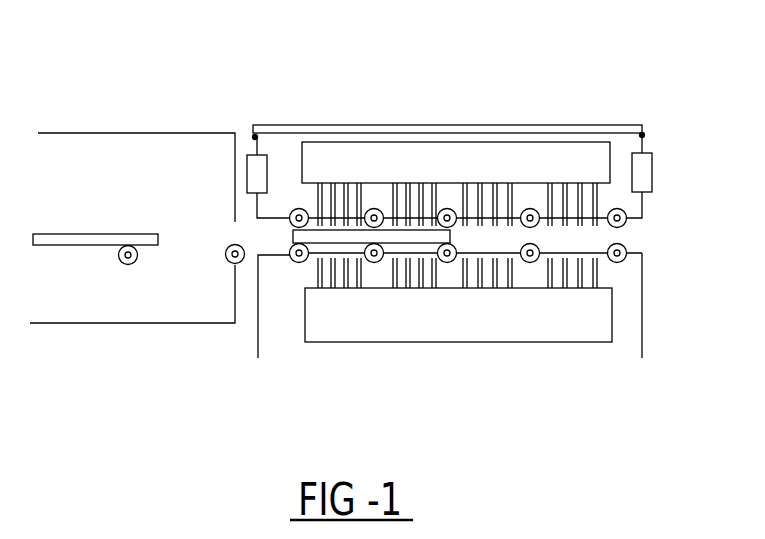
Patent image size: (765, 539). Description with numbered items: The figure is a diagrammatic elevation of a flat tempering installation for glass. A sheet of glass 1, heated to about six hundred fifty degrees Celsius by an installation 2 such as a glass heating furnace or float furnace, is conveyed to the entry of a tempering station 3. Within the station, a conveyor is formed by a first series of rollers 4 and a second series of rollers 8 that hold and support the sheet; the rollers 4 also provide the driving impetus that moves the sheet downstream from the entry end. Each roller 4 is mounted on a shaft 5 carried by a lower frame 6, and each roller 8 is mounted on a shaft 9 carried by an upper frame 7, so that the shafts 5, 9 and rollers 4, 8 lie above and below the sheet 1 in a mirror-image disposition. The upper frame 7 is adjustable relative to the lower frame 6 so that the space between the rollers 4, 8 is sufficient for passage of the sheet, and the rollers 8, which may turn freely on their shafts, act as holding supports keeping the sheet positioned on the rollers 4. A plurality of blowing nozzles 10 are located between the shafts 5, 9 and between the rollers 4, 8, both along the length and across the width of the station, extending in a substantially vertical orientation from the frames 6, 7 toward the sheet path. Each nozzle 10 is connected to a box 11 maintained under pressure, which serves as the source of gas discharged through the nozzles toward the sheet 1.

The sheet of glass 1 is at (79, 241).
The installation 2 is at (178, 307).
The tempering station 3 is at (397, 91).
The first series of rollers 4 is at (293, 260).
The shaft 5 is at (300, 263).
The frame 6 is at (257, 345).
The frame 7 is at (624, 123).
The second series of rollers 8 is at (624, 208).
The shaft 9 is at (625, 224).
The blowing nozzles 10 is at (606, 271).
The box 11 is at (504, 142).